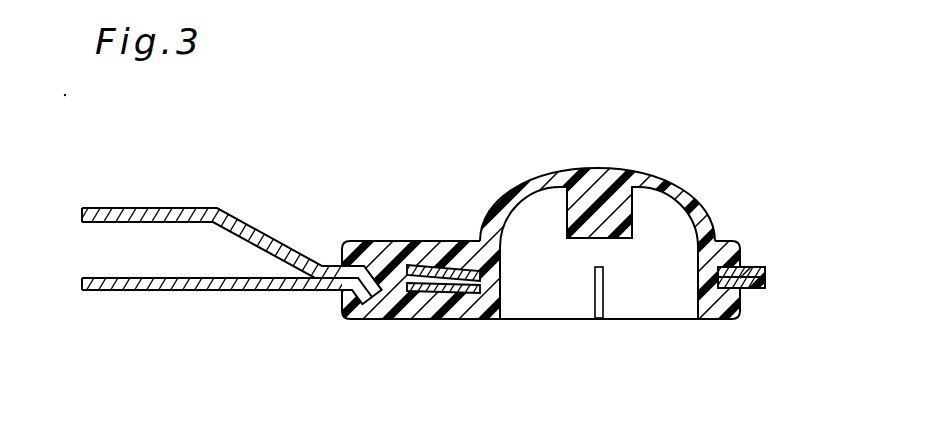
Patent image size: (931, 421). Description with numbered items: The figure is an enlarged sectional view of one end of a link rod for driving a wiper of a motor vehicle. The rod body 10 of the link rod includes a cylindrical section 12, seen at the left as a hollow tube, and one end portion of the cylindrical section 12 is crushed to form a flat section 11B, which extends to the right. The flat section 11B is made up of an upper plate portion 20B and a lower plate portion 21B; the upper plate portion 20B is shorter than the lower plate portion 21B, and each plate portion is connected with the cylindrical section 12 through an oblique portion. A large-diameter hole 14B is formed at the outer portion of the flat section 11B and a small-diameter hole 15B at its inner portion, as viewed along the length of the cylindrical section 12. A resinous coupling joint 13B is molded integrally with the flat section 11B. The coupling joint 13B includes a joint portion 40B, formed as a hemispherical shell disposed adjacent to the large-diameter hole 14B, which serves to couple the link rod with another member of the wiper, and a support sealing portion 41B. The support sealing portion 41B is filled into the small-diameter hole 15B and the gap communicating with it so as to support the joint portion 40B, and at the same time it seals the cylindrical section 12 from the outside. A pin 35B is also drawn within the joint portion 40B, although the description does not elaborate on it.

The rod body 10 is at (170, 205).
The cylindrical section 12 is at (117, 235).
The support sealing portion 41B is at (383, 247).
The coupling joint 13B is at (538, 176).
The large-diameter hole 14B is at (507, 262).
The small-diameter hole 15B is at (378, 305).
The joint portion 40B is at (645, 298).
The pin 35B is at (562, 302).
The flat section 11B is at (755, 264).
The upper plate portion 20B is at (766, 268).
The lower plate portion 21B is at (757, 289).